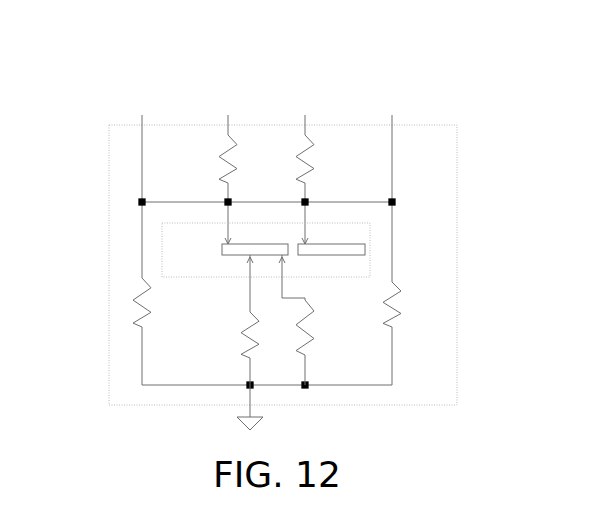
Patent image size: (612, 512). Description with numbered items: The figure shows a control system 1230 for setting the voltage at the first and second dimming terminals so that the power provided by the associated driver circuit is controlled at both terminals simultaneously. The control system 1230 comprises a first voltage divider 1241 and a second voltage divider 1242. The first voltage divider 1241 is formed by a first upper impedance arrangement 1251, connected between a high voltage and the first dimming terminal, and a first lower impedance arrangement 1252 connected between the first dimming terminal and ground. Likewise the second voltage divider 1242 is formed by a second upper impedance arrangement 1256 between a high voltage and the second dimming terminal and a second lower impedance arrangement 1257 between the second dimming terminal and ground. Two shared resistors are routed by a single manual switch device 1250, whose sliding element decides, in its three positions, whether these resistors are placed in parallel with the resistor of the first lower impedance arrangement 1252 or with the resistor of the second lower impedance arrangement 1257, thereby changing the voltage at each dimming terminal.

The control system 1230 is at (111, 249).
The first voltage divider 1241 is at (197, 72).
The second voltage divider 1242 is at (357, 66).
The single manual switch device 1250 is at (233, 281).
The first upper impedance arrangement 1251 is at (124, 173).
The first lower impedance arrangement 1252 is at (116, 342).
The second upper impedance arrangement 1256 is at (450, 167).
The second lower impedance arrangement 1257 is at (434, 349).